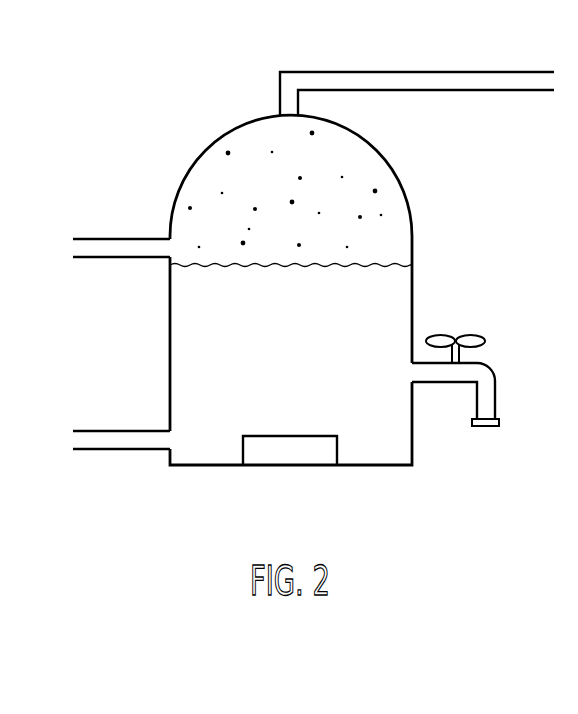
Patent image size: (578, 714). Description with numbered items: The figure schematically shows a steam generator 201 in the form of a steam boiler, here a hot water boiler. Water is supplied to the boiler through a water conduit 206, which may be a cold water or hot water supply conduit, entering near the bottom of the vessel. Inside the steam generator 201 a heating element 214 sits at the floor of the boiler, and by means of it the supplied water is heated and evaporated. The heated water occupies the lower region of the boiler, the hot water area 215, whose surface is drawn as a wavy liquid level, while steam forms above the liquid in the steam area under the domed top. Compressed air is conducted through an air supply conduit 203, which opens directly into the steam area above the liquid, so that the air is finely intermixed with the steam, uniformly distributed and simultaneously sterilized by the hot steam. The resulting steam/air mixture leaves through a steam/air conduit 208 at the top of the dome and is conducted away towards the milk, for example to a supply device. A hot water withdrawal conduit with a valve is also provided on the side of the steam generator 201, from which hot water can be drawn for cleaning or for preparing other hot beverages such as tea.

The steam generator 201 is at (413, 202).
The air supply conduit 203 is at (108, 258).
The water conduit 206 is at (109, 450).
The steam/air conduit 208 is at (431, 72).
The heating element 214 is at (311, 458).
The hot water area 215 is at (179, 387).